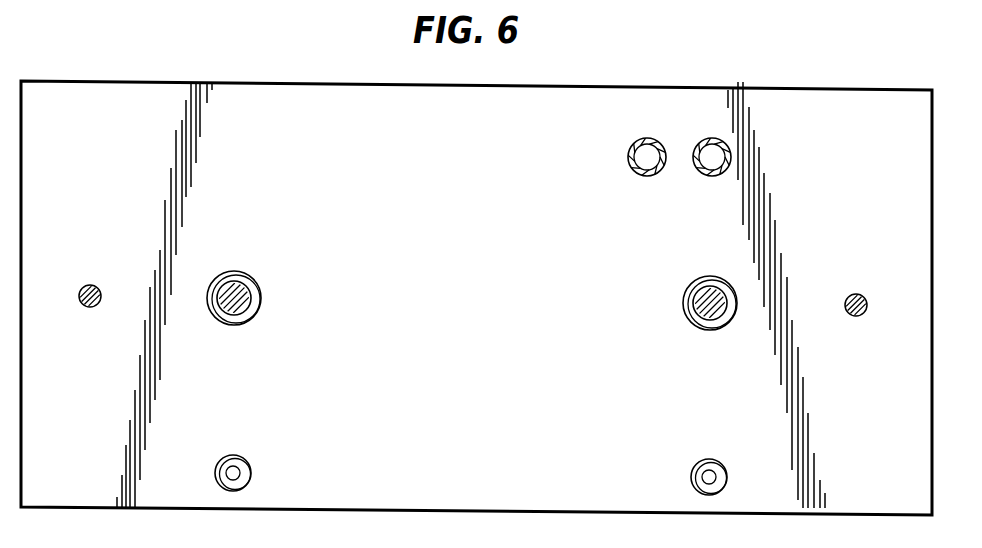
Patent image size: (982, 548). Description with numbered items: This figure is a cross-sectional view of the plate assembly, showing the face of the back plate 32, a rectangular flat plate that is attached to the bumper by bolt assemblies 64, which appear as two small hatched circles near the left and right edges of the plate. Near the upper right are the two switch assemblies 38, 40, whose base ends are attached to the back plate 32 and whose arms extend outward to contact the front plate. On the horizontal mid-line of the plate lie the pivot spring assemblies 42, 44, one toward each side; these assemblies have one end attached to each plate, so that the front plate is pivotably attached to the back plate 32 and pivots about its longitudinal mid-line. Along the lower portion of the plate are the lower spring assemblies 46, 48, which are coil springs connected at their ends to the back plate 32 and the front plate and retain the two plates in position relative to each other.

The back plate 32 is at (468, 258).
The switch assembly 38 is at (633, 168).
The switch assembly 40 is at (706, 175).
The pivot spring assembly 42 is at (254, 315).
The pivot spring assembly 44 is at (732, 312).
The lower spring assembly 46 is at (251, 470).
The lower spring assembly 48 is at (727, 475).
The bolt assembly 64 is at (94, 306).